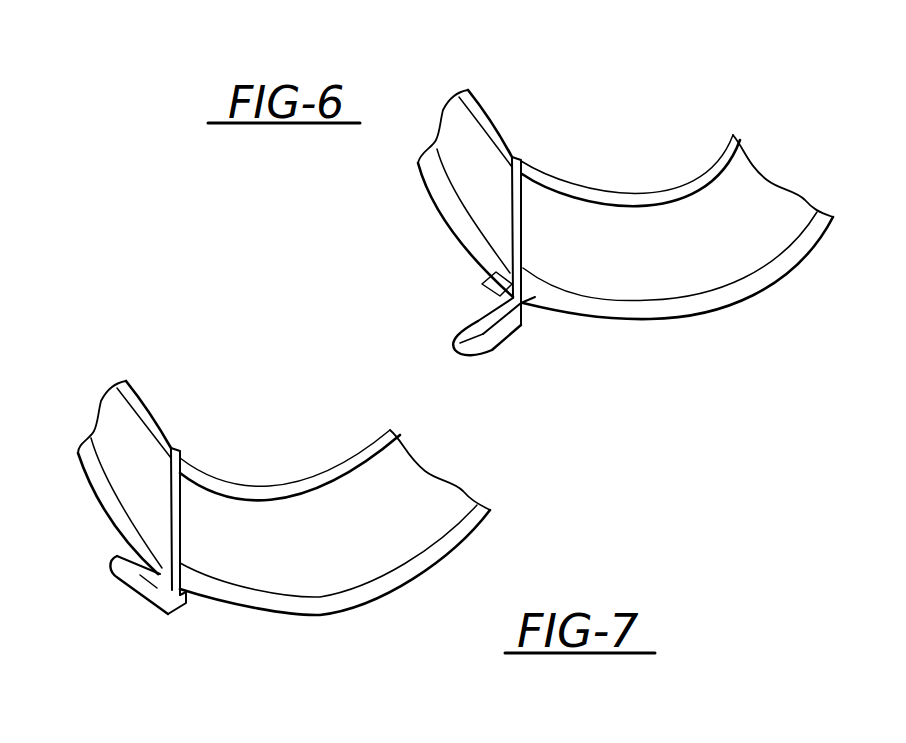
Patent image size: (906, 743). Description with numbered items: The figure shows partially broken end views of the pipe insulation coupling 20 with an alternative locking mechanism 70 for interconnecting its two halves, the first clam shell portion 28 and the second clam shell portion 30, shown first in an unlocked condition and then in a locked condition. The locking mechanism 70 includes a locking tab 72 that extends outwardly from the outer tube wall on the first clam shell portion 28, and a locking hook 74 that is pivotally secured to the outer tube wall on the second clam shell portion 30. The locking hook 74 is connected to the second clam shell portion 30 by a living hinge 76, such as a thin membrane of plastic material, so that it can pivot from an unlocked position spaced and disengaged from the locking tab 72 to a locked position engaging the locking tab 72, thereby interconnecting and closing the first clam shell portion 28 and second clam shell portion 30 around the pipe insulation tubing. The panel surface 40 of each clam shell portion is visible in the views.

In FIG. 6, the pipe insulation coupling 20 is at (685, 103).
In FIG. 7, the pipe insulation coupling 20 is at (213, 397).
In FIG. 6, the first clam shell portion 28 is at (488, 124).
In FIG. 7, the first clam shell portion 28 is at (80, 473).
In FIG. 6, the second clam shell portion 30 is at (640, 188).
In FIG. 7, the second clam shell portion 30 is at (347, 462).
In FIG. 6, the panel surface 40 is at (686, 267).
In FIG. 7, the panel surface 40 is at (356, 554).
In FIG. 6, the locking mechanism 70 is at (506, 345).
In FIG. 7, the locking mechanism 70 is at (113, 629).
In FIG. 6, the locking tab 72 is at (500, 280).
In FIG. 7, the locking tab 72 is at (158, 576).
In FIG. 6, the locking hook 74 is at (473, 357).
In FIG. 7, the locking hook 74 is at (117, 556).
In FIG. 6, the living hinge 76 is at (527, 307).
In FIG. 7, the living hinge 76 is at (186, 603).